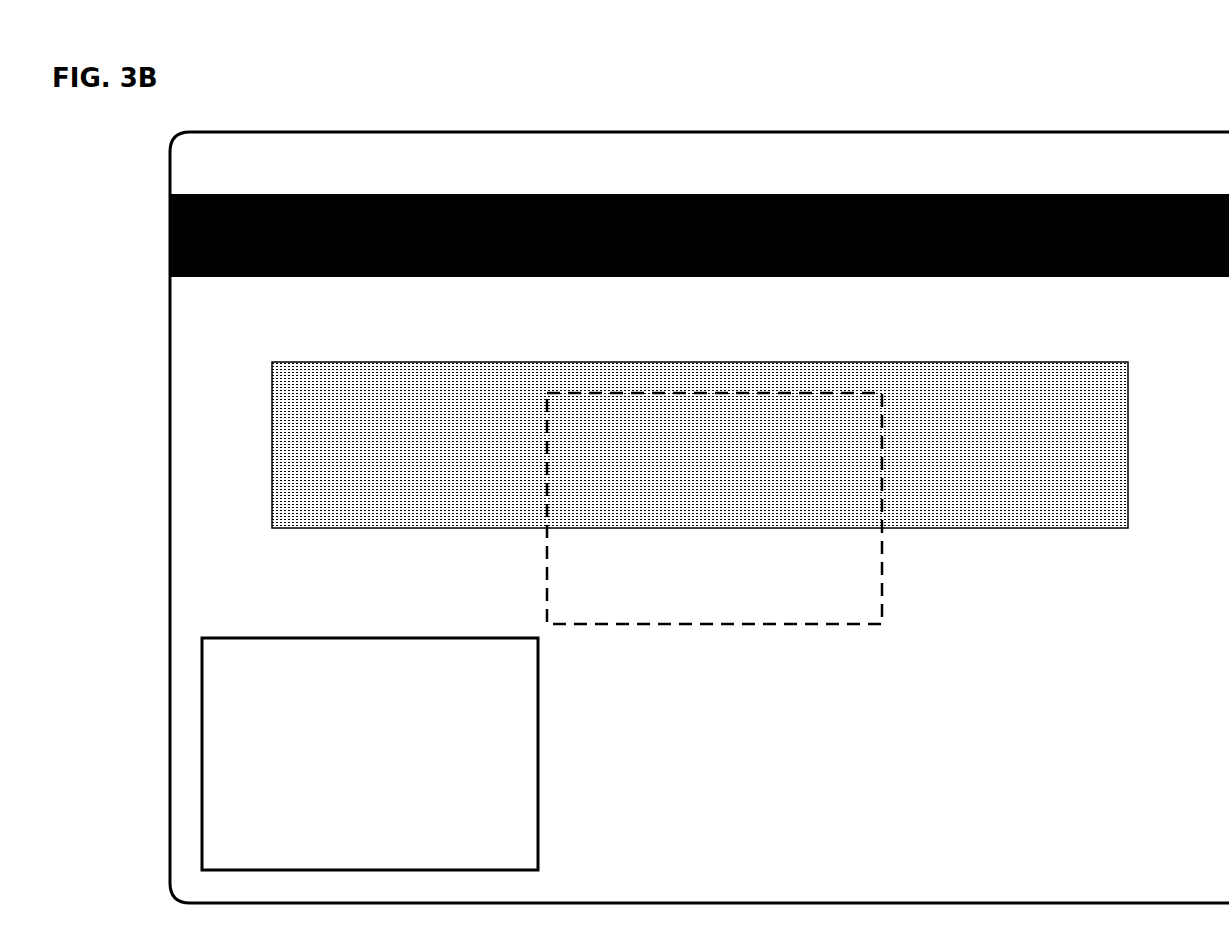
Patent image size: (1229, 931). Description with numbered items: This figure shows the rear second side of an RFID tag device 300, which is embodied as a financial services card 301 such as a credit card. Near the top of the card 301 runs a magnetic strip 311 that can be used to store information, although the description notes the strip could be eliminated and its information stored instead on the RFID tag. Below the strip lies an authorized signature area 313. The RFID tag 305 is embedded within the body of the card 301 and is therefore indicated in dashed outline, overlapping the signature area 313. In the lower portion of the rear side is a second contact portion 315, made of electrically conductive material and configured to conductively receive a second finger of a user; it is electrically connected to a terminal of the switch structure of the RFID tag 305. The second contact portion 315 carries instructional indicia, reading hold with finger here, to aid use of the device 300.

The RFID tag device 300 is at (94, 131).
The financial services card 301 is at (170, 184).
The magnetic strip 311 is at (170, 237).
The authorized signature area 313 is at (272, 422).
The RFID tag 305 is at (813, 624).
The second contact portion 315 is at (202, 683).